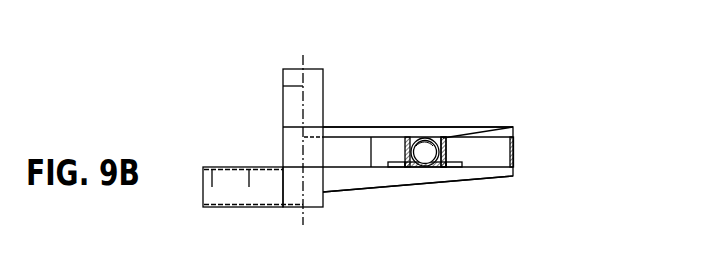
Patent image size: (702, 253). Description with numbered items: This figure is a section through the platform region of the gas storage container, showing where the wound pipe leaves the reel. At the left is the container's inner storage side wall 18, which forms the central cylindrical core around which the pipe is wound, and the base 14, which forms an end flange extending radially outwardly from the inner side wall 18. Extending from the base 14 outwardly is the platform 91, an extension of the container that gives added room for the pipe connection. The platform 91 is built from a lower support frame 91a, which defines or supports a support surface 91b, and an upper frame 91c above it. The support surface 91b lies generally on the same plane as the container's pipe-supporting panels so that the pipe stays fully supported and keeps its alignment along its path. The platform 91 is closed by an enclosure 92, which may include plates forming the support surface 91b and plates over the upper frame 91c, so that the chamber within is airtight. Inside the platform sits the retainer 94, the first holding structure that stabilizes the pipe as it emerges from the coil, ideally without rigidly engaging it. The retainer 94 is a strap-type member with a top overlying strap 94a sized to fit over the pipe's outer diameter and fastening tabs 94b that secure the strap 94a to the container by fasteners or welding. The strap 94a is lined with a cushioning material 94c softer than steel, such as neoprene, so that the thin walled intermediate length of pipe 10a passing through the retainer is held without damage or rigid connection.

The inner storage side wall 18 is at (287, 92).
The base 14 is at (266, 172).
The platform 91 is at (503, 177).
The lower support frame 91a is at (347, 180).
The support surface 91b is at (375, 137).
The upper frame 91c is at (335, 132).
The enclosure 92 is at (517, 146).
The retainer 94 is at (450, 163).
The top overlying strap 94a is at (440, 136).
The fastening tabs 94b is at (510, 127).
The cushioning material 94c is at (410, 167).
The intermediate length of pipe 10a is at (418, 141).